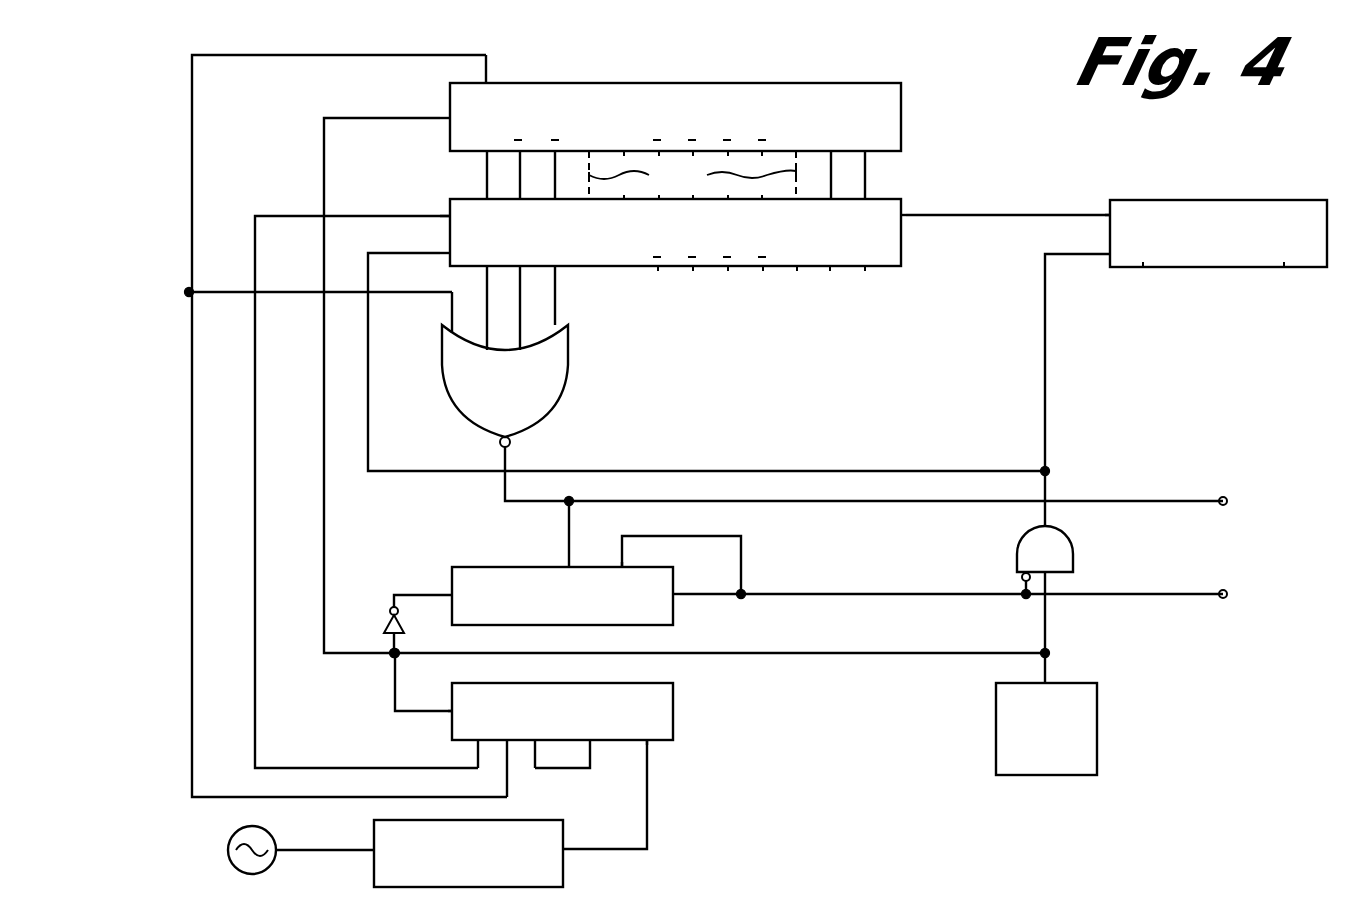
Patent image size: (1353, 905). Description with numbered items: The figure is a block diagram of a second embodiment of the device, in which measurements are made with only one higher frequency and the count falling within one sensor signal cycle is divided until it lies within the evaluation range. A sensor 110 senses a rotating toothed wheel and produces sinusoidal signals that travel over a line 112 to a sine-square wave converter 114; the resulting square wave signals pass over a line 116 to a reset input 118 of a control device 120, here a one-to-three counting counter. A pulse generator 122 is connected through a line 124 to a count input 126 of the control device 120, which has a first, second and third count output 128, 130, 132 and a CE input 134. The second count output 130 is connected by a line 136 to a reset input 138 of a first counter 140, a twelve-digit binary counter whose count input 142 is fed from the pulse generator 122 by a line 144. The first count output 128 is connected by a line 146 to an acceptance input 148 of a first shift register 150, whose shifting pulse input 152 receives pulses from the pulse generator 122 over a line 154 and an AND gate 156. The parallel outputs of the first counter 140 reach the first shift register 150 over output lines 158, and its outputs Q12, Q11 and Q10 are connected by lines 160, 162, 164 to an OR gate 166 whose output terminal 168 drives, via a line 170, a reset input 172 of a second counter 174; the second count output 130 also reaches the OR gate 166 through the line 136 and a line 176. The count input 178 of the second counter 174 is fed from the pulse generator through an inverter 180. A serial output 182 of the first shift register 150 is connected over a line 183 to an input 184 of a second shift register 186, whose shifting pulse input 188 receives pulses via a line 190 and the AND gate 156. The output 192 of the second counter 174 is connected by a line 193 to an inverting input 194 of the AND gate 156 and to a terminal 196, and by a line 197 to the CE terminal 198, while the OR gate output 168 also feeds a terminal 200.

The sensor 110 is at (234, 840).
The line 112 is at (334, 854).
The sine-square wave converter 114 is at (563, 870).
The line 116 is at (647, 820).
The reset input 118 is at (647, 742).
The control device 120 is at (673, 688).
The pulse generator 122 is at (1097, 700).
The line 124 is at (395, 683).
The count input 126 is at (452, 707).
The first count output 128 is at (478, 744).
The second count output 130 is at (507, 744).
The third count output 132 is at (531, 744).
The CE input 134 is at (590, 742).
The line 136 is at (335, 797).
The reset input 138 is at (486, 80).
The first counter 140 is at (712, 83).
The count input 142 is at (450, 116).
The line 144 is at (324, 373).
The line 146 is at (328, 768).
The acceptance input 148 is at (450, 214).
The first shift register 150 is at (778, 266).
The shifting pulse input 152 is at (450, 256).
The line 154 is at (409, 471).
The AND gate 156 is at (1073, 540).
The output lines 158 is at (692, 175).
The line 160 is at (452, 308).
The line 162 is at (522, 281).
The line 164 is at (555, 302).
The OR gate 166 is at (566, 380).
The output terminal 168 is at (510, 440).
The line 170 is at (505, 490).
The reset input 172 is at (566, 550).
The second counter 174 is at (673, 618).
The line 176 is at (202, 292).
The count input 178 is at (452, 592).
The inverter 180 is at (384, 627).
The serial output 182 is at (902, 212).
The line 183 is at (994, 215).
The input 184 is at (1110, 213).
The second shift register 186 is at (1221, 198).
The shifting pulse input 188 is at (1110, 256).
The line 190 is at (1045, 383).
The output 192 is at (676, 594).
The line 193 is at (855, 604).
The inverting input 194 is at (1022, 578).
The terminal 196 is at (1229, 594).
The line 197 is at (741, 567).
The CE terminal 198 is at (622, 566).
The terminal 200 is at (1229, 501).